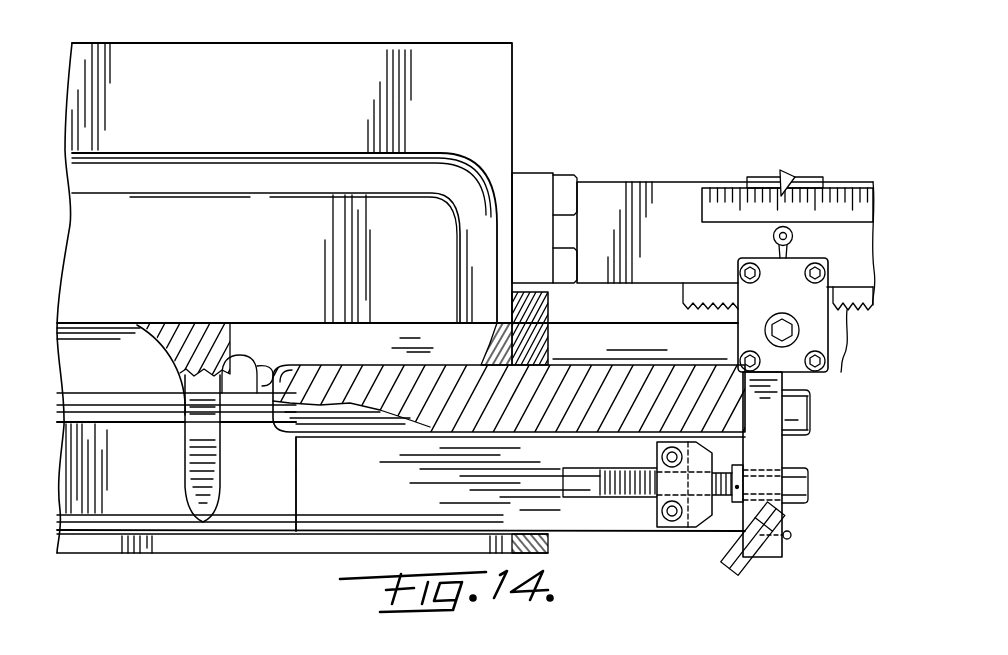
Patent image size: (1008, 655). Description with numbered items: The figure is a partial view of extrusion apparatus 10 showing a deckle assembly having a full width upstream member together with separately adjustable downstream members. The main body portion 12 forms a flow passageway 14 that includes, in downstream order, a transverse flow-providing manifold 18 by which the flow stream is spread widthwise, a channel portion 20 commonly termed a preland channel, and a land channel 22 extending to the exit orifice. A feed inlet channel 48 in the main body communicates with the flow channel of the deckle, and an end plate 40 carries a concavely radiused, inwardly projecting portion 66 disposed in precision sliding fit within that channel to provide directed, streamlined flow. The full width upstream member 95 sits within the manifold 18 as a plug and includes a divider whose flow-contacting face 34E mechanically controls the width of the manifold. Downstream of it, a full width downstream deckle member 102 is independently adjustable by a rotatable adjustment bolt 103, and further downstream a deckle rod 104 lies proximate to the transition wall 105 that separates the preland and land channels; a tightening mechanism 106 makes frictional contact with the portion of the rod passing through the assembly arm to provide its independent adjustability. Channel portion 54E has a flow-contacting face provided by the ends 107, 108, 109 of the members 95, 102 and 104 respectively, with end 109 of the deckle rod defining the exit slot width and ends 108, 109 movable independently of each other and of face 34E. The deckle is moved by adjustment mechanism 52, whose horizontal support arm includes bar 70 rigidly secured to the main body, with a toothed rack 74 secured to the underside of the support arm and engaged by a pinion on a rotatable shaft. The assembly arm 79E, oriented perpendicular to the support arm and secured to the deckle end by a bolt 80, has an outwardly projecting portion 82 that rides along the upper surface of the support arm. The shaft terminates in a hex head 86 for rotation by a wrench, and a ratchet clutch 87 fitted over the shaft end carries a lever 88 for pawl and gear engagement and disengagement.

The extrusion apparatus 10 is at (572, 58).
The main body portion 12 is at (263, 45).
The flow passageway 14 is at (97, 352).
The manifold 18 is at (130, 380).
The channel portion 20 is at (146, 493).
The land channel 22 is at (110, 552).
The flow-contacting face 34E is at (170, 382).
The end plate 40 is at (553, 306).
The feed inlet channel 48 is at (292, 178).
The adjustment mechanism 52 is at (795, 135).
The channel portion 54E is at (246, 372).
The inwardly projecting portion 66 is at (490, 345).
The support arm bar 70 is at (618, 195).
The toothed rack 74 is at (845, 352).
The assembly arm 79E is at (783, 458).
The bolt 80 is at (810, 408).
The outwardly projecting portion 82 is at (760, 177).
The hex head 86 is at (789, 321).
The ratchet clutch 87 is at (754, 258).
The lever 88 is at (792, 238).
The upstream member 95 is at (186, 318).
The downstream deckle member 102 is at (540, 500).
The adjustment bolt 103 is at (796, 499).
The deckle rod 104 is at (642, 536).
The transition wall 105 is at (228, 515).
The tightening mechanism 106 is at (760, 540).
The end of upstream deckle member 107 is at (283, 368).
The end of downstream deckle member 108 is at (299, 462).
The end of deckle rod 109 is at (298, 512).